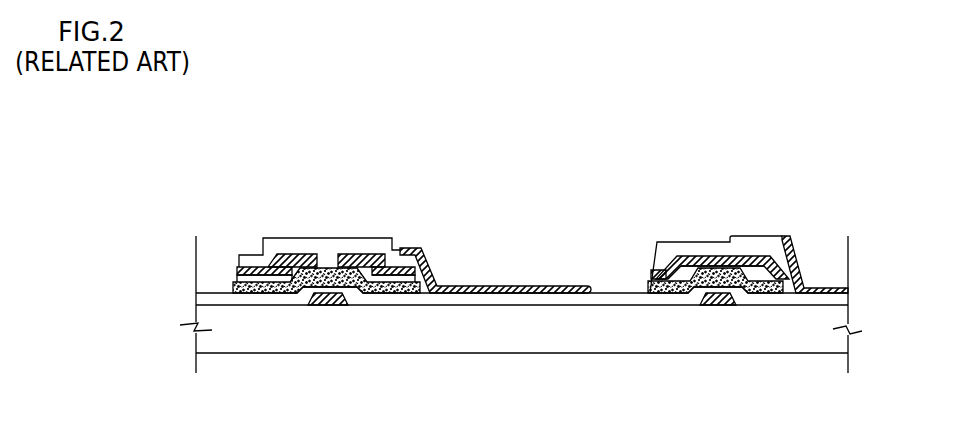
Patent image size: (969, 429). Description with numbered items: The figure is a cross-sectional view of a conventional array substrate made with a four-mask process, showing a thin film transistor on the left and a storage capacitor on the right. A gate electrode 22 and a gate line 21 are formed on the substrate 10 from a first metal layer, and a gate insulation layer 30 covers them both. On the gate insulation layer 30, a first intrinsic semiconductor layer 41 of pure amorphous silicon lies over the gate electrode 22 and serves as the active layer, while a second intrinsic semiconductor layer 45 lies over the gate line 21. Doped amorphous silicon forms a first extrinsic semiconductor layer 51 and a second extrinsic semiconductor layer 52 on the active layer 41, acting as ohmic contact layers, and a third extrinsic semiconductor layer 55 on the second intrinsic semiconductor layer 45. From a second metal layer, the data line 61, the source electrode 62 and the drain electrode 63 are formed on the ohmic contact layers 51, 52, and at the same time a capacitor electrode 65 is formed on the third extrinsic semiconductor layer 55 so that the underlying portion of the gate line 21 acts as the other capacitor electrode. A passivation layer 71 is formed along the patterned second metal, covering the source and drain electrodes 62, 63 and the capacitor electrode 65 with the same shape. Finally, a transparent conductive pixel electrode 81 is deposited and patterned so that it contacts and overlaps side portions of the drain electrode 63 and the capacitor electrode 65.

The substrate 10 is at (458, 330).
The gate line 21 is at (717, 307).
The gate electrode 22 is at (327, 307).
The gate insulation layer 30 is at (569, 301).
The first intrinsic semiconductor layer 41 is at (330, 270).
The second intrinsic semiconductor layer 45 is at (755, 257).
The first extrinsic semiconductor layer 51 is at (255, 267).
The second extrinsic semiconductor layer 52 is at (386, 265).
The third extrinsic semiconductor layer 55 is at (720, 258).
The data line 61 is at (239, 256).
The source electrode 62 is at (290, 262).
The drain electrode 63 is at (365, 265).
The capacitor electrode 65 is at (687, 257).
The passivation layer 71 is at (413, 251).
The pixel electrode 81 is at (495, 287).